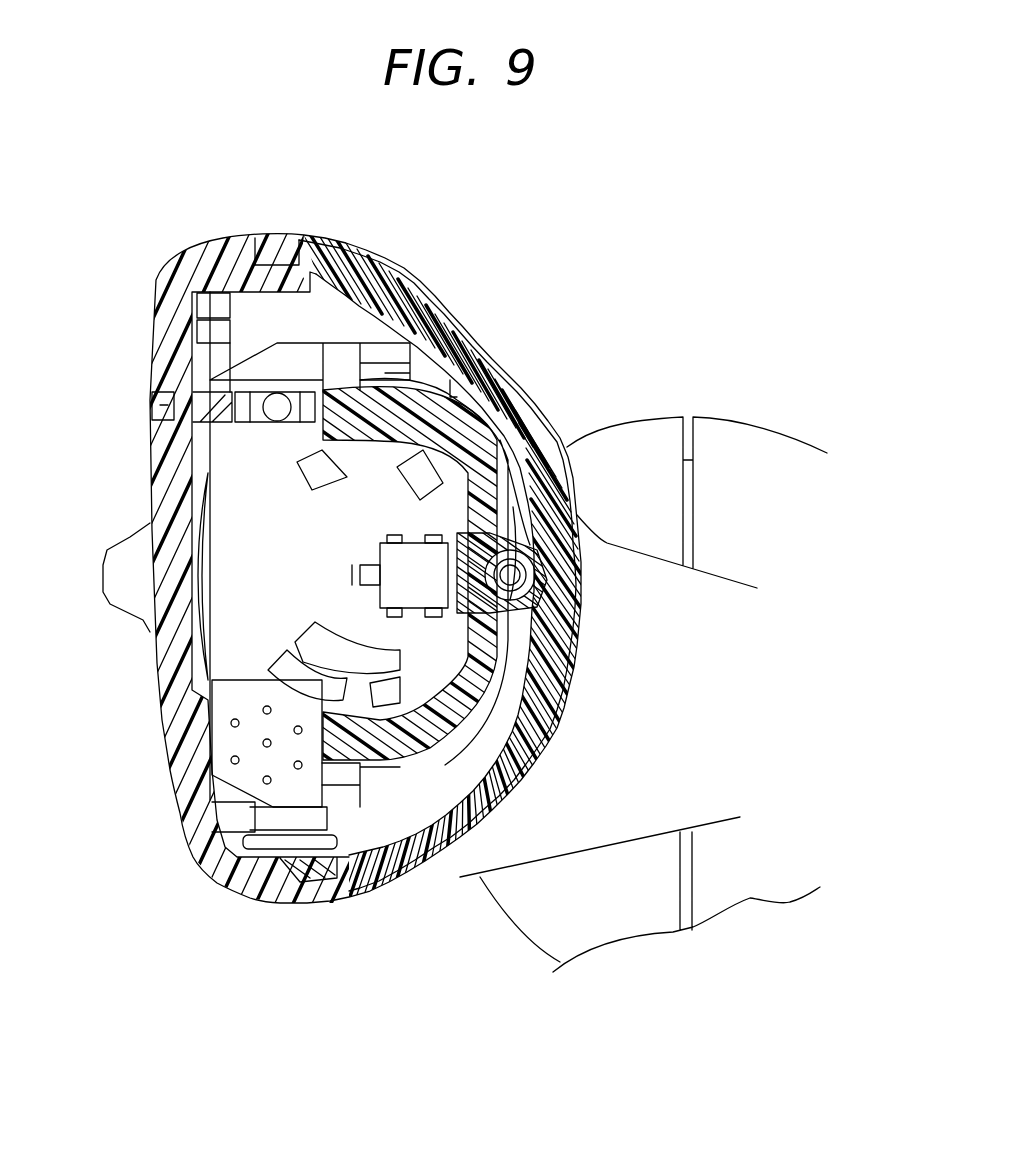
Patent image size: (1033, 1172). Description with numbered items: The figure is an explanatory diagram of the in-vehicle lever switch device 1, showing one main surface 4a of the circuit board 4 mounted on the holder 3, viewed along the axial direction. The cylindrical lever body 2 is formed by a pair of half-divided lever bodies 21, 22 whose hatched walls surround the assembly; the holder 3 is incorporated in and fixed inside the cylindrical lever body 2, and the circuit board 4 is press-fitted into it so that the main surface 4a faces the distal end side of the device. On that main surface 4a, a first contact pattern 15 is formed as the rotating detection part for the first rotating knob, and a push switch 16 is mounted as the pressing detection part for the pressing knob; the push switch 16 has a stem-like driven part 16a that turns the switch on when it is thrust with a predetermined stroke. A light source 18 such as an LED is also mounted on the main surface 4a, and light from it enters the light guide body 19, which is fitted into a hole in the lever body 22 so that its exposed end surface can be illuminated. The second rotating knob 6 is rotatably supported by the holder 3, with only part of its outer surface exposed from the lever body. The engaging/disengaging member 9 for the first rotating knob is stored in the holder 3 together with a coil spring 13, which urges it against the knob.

The in-vehicle lever switch device 1 is at (735, 278).
The cylindrical lever body 2 is at (403, 973).
The holder 3 is at (393, 410).
The circuit board 4 is at (305, 343).
The main surface 4a is at (253, 585).
The second rotating knob 6 is at (132, 550).
The engaging/disengaging member 9 is at (513, 577).
The coil spring 13 is at (540, 607).
The first contact pattern 15 is at (423, 477).
The push switch 16 is at (478, 462).
The driven part 16a is at (380, 577).
The light source 18 is at (277, 413).
The light guide body 19 is at (158, 408).
The lever body 21 is at (372, 880).
The lever body 22 is at (260, 898).